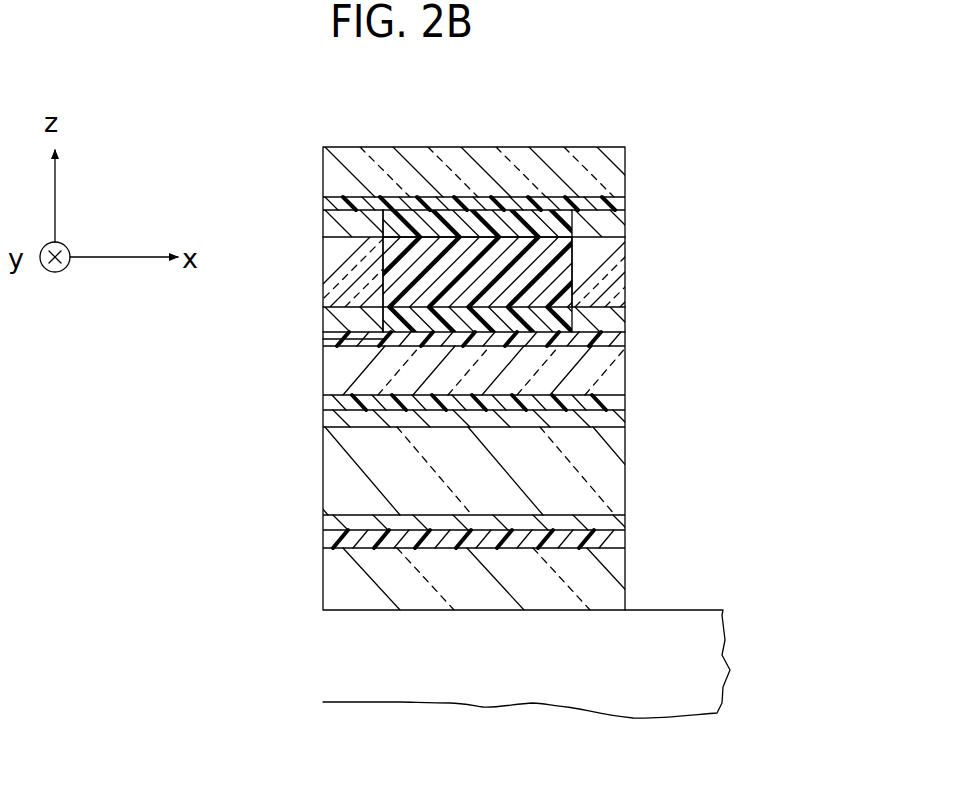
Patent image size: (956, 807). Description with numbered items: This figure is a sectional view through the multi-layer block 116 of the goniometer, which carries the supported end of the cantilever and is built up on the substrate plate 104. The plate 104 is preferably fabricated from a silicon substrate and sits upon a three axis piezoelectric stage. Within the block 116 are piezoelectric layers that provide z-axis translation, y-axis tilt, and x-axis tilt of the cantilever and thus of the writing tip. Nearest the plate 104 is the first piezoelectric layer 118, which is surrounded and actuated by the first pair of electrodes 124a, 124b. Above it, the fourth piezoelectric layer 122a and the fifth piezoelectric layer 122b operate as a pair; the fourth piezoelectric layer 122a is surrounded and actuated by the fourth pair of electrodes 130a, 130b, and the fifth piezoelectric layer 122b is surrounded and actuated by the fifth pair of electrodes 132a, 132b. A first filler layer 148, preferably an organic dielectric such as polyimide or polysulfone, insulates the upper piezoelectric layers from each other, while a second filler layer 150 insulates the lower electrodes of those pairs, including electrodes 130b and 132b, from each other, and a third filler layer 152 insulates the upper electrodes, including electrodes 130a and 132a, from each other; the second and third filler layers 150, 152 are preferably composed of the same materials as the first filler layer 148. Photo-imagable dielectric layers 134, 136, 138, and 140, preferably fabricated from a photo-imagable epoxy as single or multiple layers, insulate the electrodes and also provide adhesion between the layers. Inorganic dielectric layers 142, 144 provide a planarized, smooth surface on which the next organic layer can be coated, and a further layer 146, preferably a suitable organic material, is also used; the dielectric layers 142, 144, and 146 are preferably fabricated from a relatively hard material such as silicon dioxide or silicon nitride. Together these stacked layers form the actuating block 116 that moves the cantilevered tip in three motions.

The substrate plate 104 is at (470, 692).
The block 116 is at (280, 479).
The first piezoelectric layer 118 is at (607, 485).
The fourth piezoelectric layer 122a is at (332, 253).
The fifth piezoelectric layer 122b is at (620, 260).
The first pair of electrodes 124a is at (618, 528).
The first pair of electrodes 124b is at (618, 420).
The fourth pair of electrodes 130a is at (335, 317).
The fourth pair of electrodes 130b is at (335, 223).
The fifth pair of electrodes 132a is at (625, 318).
The fifth pair of electrodes 132b is at (620, 225).
The photo-imagable dielectric layer 134 is at (322, 543).
The photo-imagable dielectric layer 136 is at (327, 405).
The photo-imagable dielectric layer 138 is at (618, 346).
The photo-imagable dielectric layer 140 is at (613, 208).
The inorganic dielectric layer 142 is at (608, 587).
The inorganic dielectric layer 144 is at (605, 383).
The organic dielectric layer 146 is at (615, 167).
The first filler layer 148 is at (400, 270).
The second filler layer 150 is at (350, 341).
The third filler layer 152 is at (495, 220).